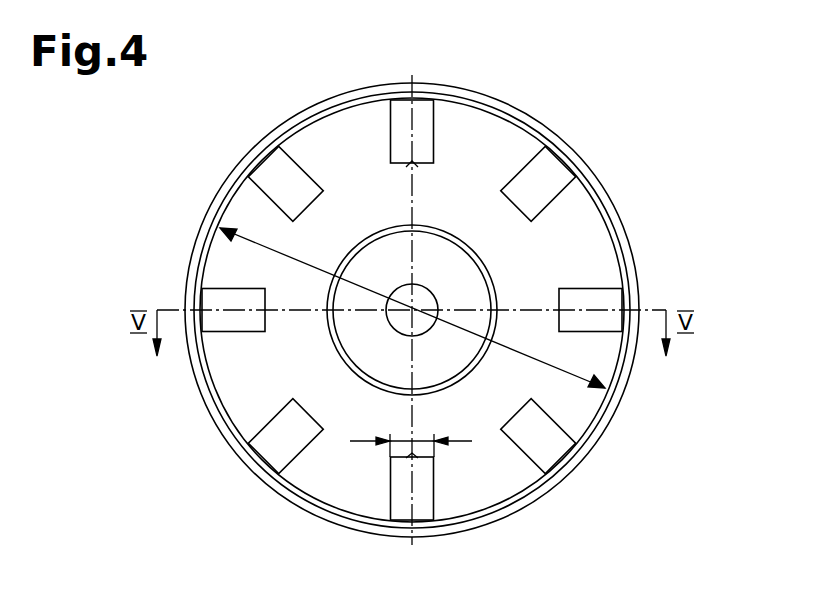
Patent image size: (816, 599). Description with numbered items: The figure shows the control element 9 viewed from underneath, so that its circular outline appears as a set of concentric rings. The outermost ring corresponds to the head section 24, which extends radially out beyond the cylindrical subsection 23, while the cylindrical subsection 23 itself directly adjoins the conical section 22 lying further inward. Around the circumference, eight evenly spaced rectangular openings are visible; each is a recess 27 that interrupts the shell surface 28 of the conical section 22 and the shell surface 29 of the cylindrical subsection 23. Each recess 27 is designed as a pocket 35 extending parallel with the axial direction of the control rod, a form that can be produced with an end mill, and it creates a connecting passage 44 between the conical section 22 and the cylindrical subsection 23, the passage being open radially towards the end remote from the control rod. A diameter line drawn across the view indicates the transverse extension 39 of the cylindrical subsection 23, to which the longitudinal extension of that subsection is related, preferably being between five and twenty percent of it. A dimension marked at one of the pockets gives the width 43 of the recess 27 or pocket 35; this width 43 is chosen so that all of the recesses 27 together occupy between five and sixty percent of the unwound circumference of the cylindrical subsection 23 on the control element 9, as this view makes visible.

The control element 9 is at (655, 103).
The conical section 22 is at (582, 242).
The cylindrical subsection 23 is at (586, 198).
The head section 24 is at (632, 269).
The recess 27 is at (374, 313).
The pocket 35 is at (374, 313).
The connecting passage 44 is at (270, 172).
The shell surface of the conical section 28 is at (572, 356).
The shell surface of the cylindrical subsection 29 is at (589, 426).
The transverse extension of the cylindrical subsection 39 is at (562, 377).
The width of the recess 43 is at (418, 437).